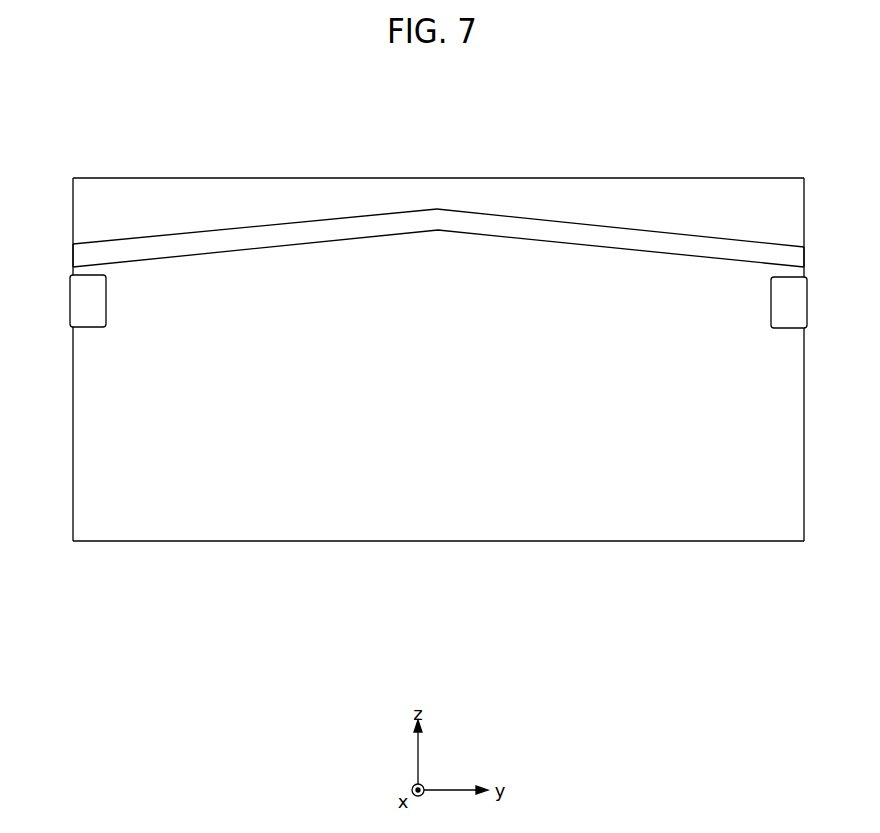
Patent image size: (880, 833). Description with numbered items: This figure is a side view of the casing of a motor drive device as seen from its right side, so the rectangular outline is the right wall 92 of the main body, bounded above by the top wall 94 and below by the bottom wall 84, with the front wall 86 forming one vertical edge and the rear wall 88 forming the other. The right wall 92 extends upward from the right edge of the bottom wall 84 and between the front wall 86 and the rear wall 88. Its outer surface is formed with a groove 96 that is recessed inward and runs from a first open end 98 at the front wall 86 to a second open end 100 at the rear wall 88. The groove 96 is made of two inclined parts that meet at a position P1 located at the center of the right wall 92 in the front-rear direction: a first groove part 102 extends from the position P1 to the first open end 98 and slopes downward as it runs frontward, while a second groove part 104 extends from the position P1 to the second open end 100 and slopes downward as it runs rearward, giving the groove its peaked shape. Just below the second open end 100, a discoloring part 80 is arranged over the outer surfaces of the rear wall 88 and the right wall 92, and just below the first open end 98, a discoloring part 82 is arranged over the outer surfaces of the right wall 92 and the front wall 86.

The discoloring part 80 is at (88, 303).
The discoloring part 82 is at (790, 303).
The bottom wall 84 is at (178, 541).
The front wall 86 is at (804, 480).
The rear wall 88 is at (73, 469).
The right wall 92 is at (665, 428).
The top wall 94 is at (233, 178).
The groove 96 is at (478, 240).
The first open end 98 is at (804, 258).
The second open end 100 is at (73, 258).
The first groove part 102 is at (620, 243).
The second groove part 104 is at (300, 237).
The position P1 is at (437, 209).